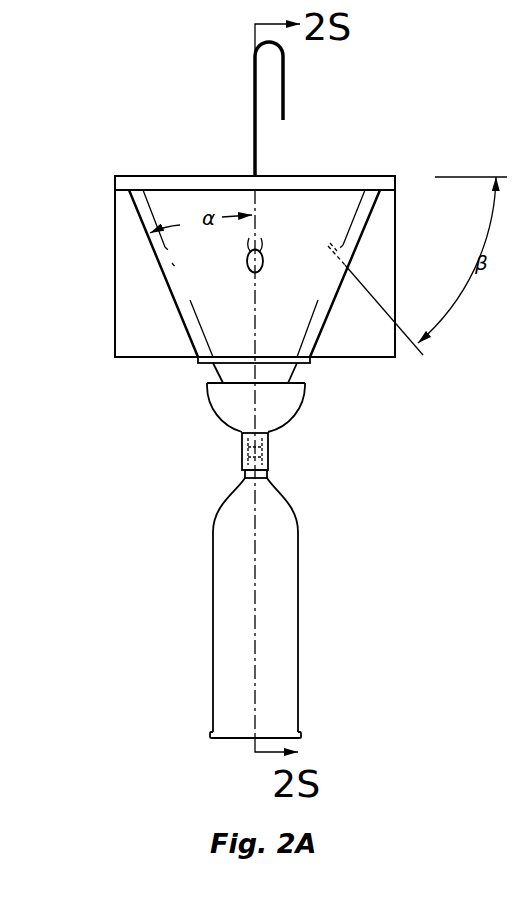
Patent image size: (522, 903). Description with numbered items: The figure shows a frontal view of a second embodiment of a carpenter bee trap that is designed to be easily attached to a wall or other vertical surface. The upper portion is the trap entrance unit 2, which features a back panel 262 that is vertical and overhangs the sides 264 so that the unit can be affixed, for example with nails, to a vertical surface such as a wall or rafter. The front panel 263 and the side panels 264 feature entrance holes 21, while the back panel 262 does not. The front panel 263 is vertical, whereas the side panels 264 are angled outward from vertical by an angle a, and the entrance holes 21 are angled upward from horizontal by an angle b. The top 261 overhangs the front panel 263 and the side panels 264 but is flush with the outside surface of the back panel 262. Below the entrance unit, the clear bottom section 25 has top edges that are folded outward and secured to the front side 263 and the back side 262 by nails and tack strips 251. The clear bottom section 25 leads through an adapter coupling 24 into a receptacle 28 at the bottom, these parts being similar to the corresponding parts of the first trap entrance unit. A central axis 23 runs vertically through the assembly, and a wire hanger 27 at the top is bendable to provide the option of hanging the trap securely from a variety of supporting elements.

The trap entrance unit 2 is at (367, 173).
The entrance holes 21 is at (267, 260).
The central axis 23 is at (277, 218).
The adapter coupling 24 is at (270, 457).
The clear bottom section 25 is at (308, 397).
The tack strips 251 is at (197, 362).
The top 261 is at (160, 175).
The back panel 262 is at (135, 270).
The front panel 263 is at (217, 317).
The side panels 264 is at (173, 307).
The wire hanger 27 is at (290, 66).
The receptacle 28 is at (298, 538).